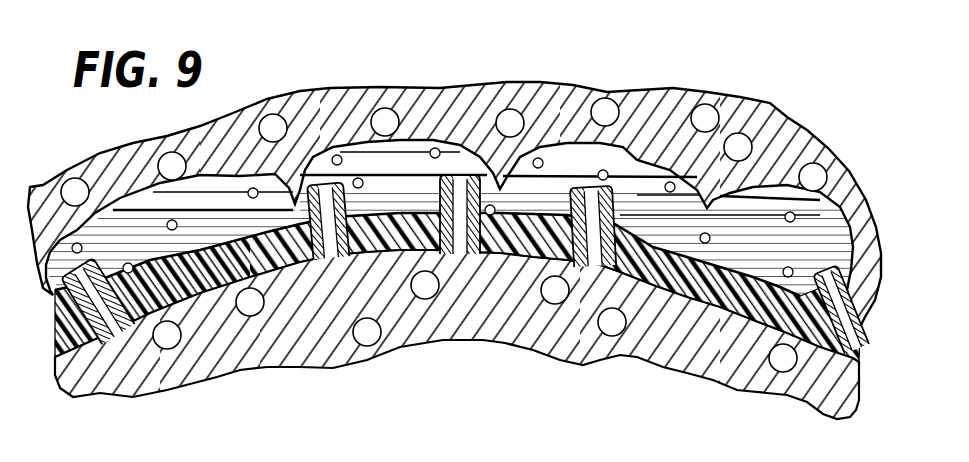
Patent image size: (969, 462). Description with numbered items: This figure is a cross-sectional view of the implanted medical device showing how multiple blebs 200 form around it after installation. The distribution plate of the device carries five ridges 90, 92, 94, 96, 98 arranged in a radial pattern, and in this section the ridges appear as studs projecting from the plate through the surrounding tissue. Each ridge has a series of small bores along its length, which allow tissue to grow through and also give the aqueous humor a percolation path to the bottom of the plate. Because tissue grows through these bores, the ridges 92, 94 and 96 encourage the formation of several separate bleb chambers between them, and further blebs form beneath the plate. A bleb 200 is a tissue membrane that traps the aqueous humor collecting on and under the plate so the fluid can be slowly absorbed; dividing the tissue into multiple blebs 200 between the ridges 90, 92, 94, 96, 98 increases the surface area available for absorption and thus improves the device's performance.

The blebs 200 is at (200, 200).
The ridge 90 is at (103, 280).
The ridge 92 is at (295, 204).
The ridge 94 is at (443, 187).
The ridge 96 is at (570, 205).
The ridge 98 is at (818, 270).